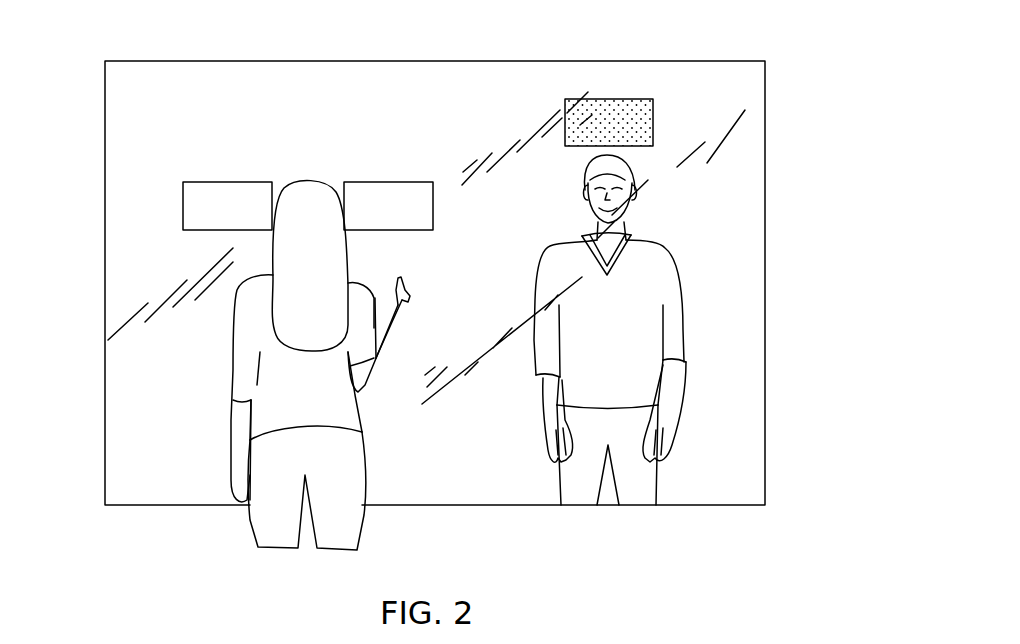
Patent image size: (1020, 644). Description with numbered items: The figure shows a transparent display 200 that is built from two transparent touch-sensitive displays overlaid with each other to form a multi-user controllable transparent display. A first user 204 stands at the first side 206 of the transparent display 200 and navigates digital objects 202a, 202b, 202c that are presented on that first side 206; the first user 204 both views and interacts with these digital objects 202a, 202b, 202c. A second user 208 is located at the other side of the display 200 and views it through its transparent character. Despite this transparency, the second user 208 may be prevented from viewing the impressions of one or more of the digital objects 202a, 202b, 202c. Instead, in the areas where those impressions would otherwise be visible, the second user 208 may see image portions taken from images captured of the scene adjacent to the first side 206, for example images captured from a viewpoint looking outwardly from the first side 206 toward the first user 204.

The transparent display 200 is at (765, 100).
The digital object 202a is at (226, 182).
The digital object 202b is at (386, 182).
The digital object 202c is at (637, 99).
The first user 204 is at (240, 368).
The first side 206 is at (143, 142).
The second user 208 is at (677, 327).